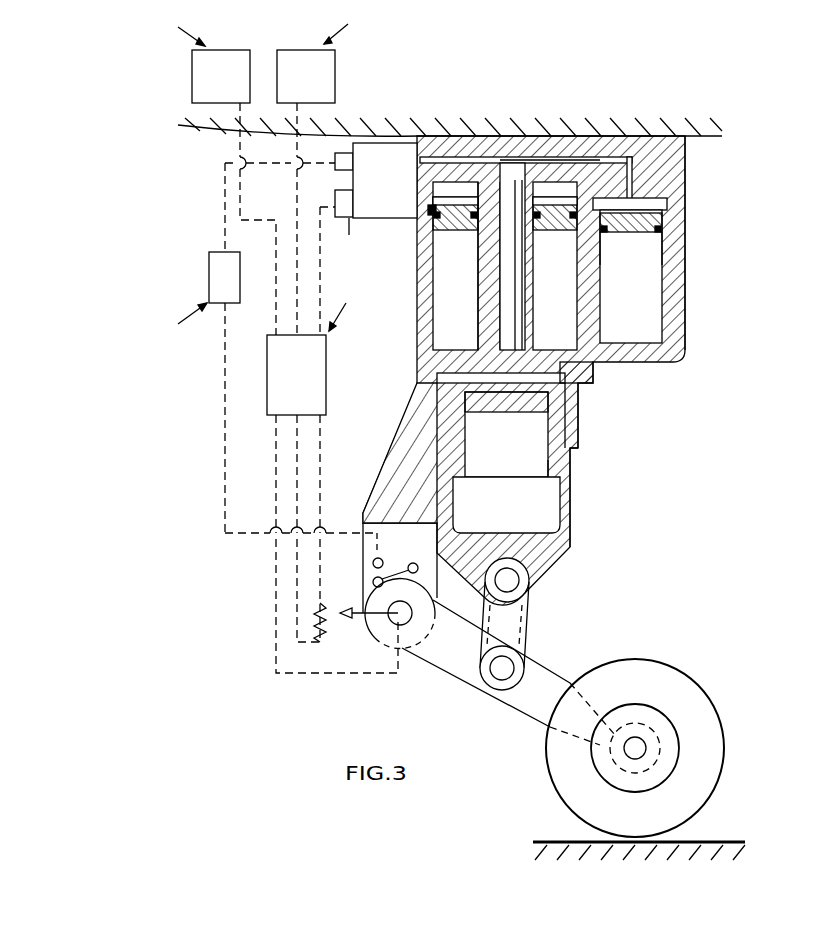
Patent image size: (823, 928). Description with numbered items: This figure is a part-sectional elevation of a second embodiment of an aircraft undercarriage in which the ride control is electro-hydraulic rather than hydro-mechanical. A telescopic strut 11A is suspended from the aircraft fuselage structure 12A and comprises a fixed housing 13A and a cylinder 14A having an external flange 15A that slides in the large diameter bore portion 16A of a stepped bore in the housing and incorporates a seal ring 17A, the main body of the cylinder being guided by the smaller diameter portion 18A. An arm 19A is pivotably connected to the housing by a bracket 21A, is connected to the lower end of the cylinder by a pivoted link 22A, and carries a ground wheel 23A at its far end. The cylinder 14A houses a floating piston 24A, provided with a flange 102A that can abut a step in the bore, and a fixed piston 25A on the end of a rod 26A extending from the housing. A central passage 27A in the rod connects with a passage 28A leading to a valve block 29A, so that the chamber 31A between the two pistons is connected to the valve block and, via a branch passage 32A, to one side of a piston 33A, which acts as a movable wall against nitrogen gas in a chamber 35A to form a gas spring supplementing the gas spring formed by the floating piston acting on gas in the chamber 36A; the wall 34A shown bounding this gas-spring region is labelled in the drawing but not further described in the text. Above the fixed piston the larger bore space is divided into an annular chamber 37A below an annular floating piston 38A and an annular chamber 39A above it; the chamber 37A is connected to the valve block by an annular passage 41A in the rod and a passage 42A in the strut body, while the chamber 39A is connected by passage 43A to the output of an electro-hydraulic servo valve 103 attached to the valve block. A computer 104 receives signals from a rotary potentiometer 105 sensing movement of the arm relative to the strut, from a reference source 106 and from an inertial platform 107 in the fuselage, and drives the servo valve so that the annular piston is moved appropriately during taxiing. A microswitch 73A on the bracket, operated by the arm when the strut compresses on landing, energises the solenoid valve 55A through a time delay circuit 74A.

The fuselage structure 12A is at (710, 139).
The telescopic strut 11A is at (575, 548).
The bracket 21A is at (388, 466).
The passage 42A is at (462, 157).
The passage 28A is at (536, 158).
The branch passage 32A is at (632, 180).
The annular chamber 37A is at (471, 336).
The annular floating piston 38A is at (455, 227).
The central passage 27A is at (497, 275).
The annular chamber 39A is at (428, 216).
The annular passage 41A is at (522, 276).
The fixed piston 25A is at (555, 266).
The rod 26A is at (530, 250).
The chamber 35A is at (640, 336).
The piston 33A is at (612, 236).
The large diameter bore portion 16A is at (578, 298).
The cylinder housing wall 34A is at (672, 282).
The chamber 31A is at (437, 378).
The floating piston 24A is at (500, 412).
The chamber 36A is at (533, 517).
The flange 102A is at (548, 474).
The seal ring 17A is at (577, 372).
The external flange 15A is at (573, 392).
The fixed housing 13A is at (577, 412).
The smaller diameter portion 18A is at (567, 452).
The cylinder 14A is at (571, 498).
The pivoted link 22A is at (526, 624).
The arm 19A is at (453, 680).
The ground wheel 23A is at (620, 660).
The microswitch 73A is at (414, 562).
The rotary potentiometer 105 is at (343, 620).
The computer 104 is at (329, 362).
The time delay circuit 74A is at (236, 304).
The reference source 106 is at (221, 106).
The inertial platform 107 is at (337, 70).
The solenoid valve 55A is at (343, 152).
The electro-hydraulic servo valve 103 is at (330, 193).
The passage 43A is at (420, 205).
The valve block 29A is at (349, 222).